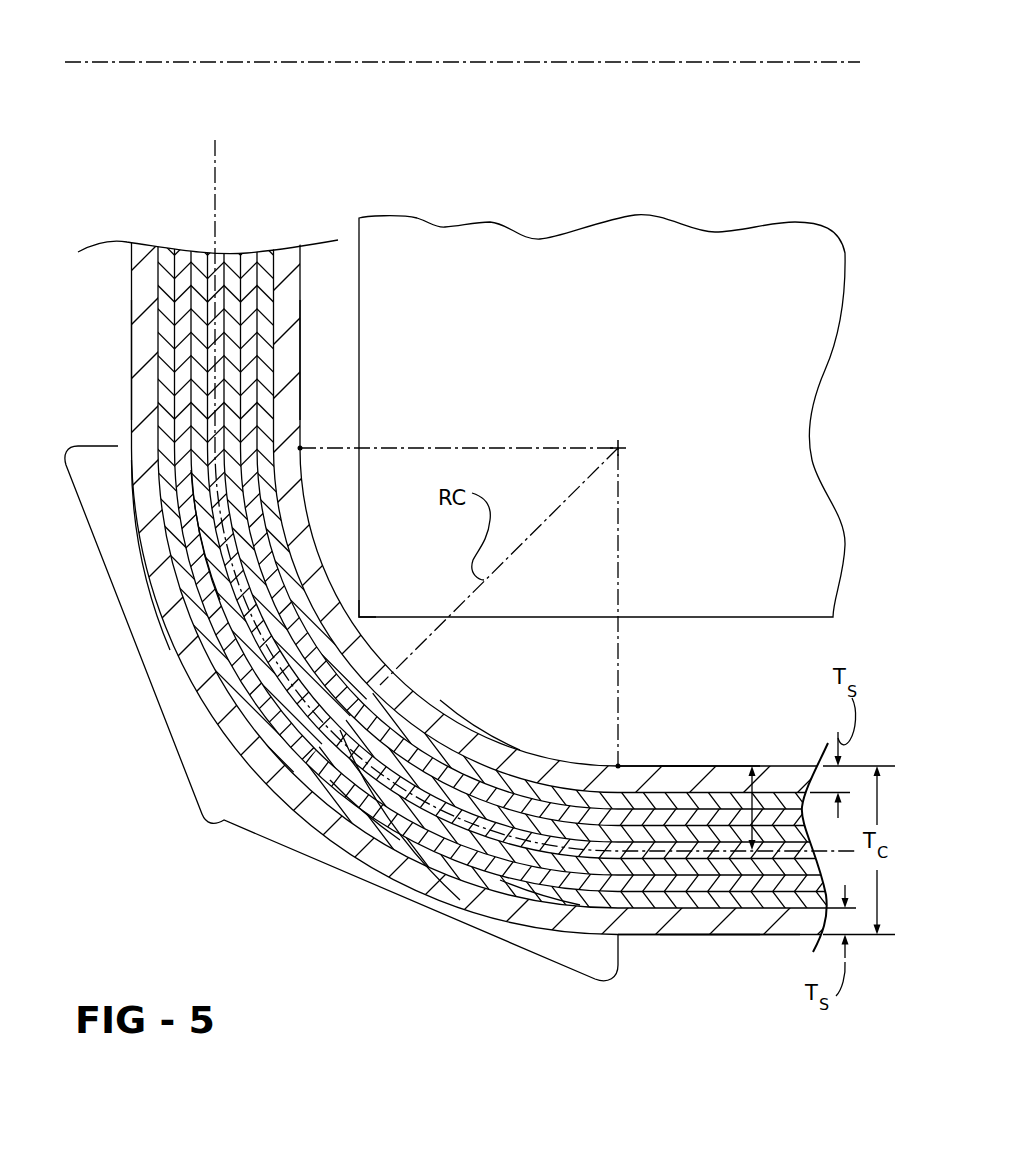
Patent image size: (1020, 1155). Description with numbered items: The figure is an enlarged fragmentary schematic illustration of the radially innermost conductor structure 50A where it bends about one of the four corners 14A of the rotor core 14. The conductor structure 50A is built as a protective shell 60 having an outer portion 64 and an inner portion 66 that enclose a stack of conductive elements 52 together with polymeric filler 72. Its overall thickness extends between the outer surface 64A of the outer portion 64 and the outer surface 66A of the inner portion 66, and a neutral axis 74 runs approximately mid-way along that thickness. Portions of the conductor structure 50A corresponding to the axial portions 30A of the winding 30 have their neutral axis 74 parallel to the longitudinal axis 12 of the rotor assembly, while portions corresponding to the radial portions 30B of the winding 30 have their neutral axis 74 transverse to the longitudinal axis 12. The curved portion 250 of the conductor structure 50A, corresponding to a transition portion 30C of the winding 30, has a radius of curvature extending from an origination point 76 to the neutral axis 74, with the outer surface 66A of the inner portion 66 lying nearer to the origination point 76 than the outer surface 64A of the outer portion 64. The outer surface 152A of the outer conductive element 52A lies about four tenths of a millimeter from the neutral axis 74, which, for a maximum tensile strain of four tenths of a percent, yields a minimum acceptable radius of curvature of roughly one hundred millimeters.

The longitudinal axis 12 is at (90, 65).
The rotor core 14 is at (499, 387).
The corner 14A is at (352, 626).
The winding 30 is at (183, 896).
The axial portion 30A is at (767, 953).
The radial portion 30B is at (102, 403).
The transition portion 30C is at (408, 933).
The radially innermost conductor structure 50A is at (310, 356).
The conductive element 52 is at (192, 536).
The outer conductive element 52A is at (372, 835).
The protective shell 60 is at (183, 688).
The outer portion 64 is at (636, 935).
The outer surface of the outer portion 64A is at (693, 935).
The inner portion 66 is at (632, 772).
The outer surface of the inner portion 66A is at (683, 766).
The polymeric filler 72 is at (484, 732).
The neutral axis 74 is at (752, 852).
The origination point 76 is at (620, 446).
The outer surface of the outer conductive element 152A is at (543, 905).
The conductor structure portion 250 is at (215, 818).